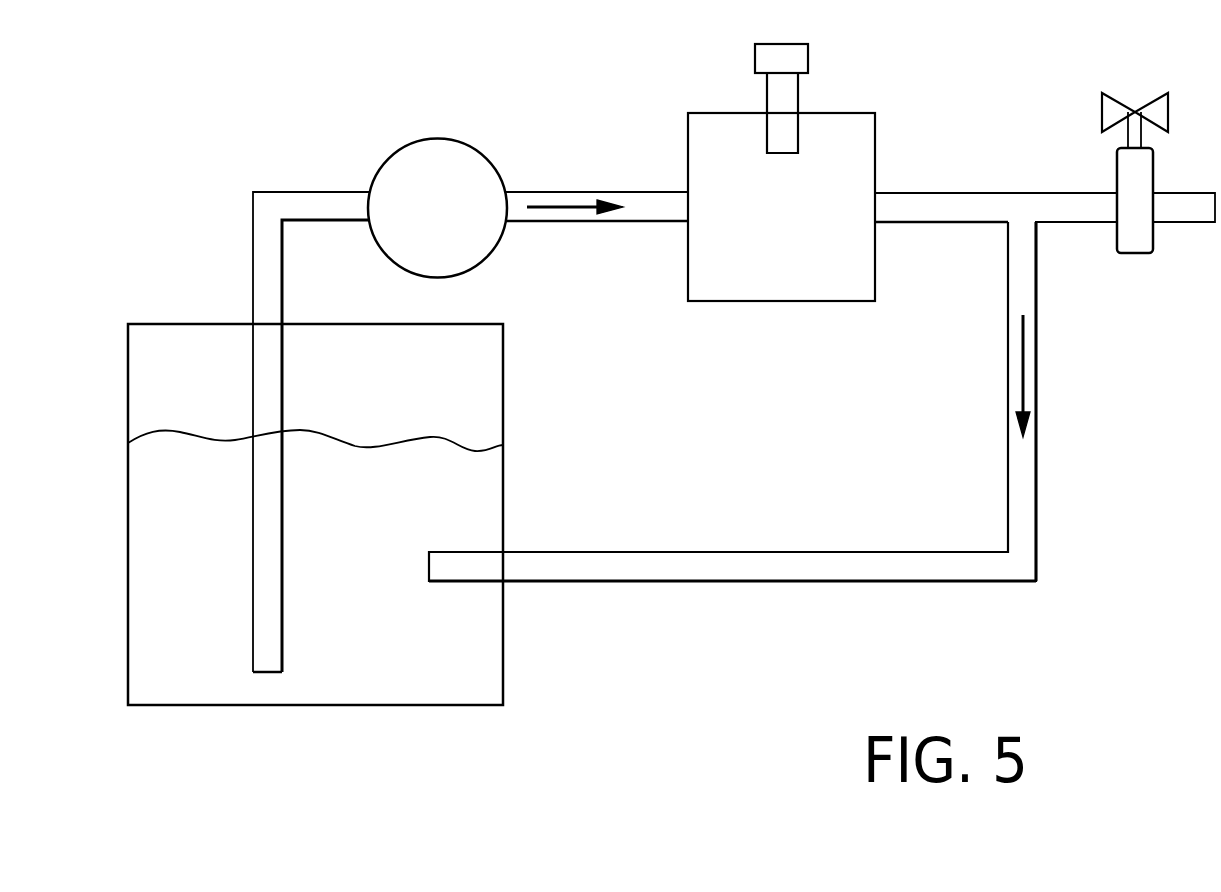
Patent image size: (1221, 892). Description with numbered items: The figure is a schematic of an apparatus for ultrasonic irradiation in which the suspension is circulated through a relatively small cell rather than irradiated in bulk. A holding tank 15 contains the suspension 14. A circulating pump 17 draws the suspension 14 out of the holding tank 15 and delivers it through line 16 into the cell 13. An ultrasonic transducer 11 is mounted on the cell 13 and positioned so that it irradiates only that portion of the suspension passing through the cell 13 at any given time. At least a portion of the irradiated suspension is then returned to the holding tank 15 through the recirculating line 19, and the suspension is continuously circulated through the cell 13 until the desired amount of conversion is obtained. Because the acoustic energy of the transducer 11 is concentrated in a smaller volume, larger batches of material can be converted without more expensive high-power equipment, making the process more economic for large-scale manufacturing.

The ultrasonic transducer 11 is at (800, 90).
The cell 13 is at (703, 113).
The suspension 14 is at (355, 555).
The holding tank 15 is at (505, 657).
The line 16 is at (546, 222).
The circulating pump 17 is at (408, 143).
The recirculating line 19 is at (947, 584).